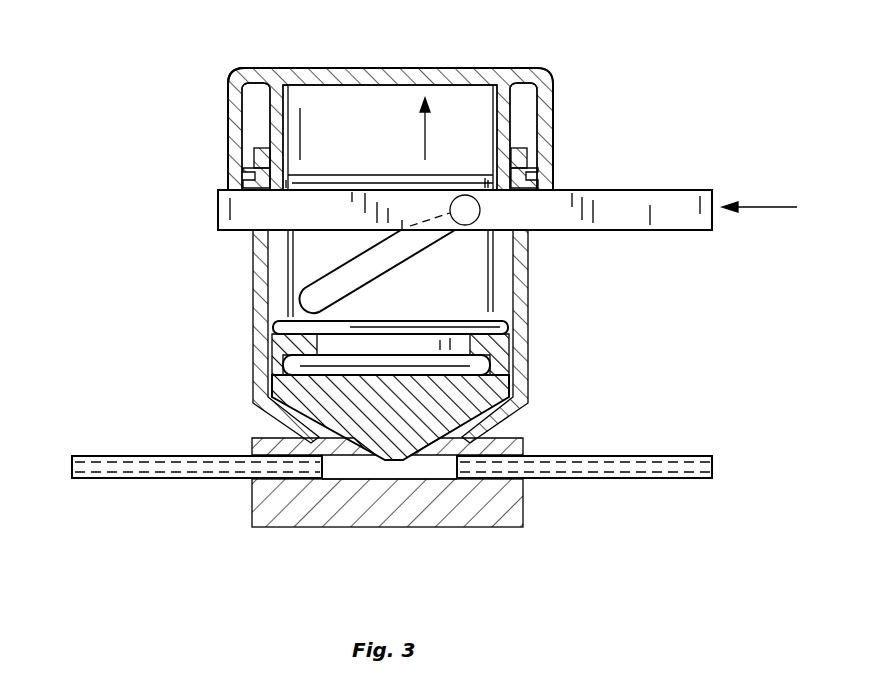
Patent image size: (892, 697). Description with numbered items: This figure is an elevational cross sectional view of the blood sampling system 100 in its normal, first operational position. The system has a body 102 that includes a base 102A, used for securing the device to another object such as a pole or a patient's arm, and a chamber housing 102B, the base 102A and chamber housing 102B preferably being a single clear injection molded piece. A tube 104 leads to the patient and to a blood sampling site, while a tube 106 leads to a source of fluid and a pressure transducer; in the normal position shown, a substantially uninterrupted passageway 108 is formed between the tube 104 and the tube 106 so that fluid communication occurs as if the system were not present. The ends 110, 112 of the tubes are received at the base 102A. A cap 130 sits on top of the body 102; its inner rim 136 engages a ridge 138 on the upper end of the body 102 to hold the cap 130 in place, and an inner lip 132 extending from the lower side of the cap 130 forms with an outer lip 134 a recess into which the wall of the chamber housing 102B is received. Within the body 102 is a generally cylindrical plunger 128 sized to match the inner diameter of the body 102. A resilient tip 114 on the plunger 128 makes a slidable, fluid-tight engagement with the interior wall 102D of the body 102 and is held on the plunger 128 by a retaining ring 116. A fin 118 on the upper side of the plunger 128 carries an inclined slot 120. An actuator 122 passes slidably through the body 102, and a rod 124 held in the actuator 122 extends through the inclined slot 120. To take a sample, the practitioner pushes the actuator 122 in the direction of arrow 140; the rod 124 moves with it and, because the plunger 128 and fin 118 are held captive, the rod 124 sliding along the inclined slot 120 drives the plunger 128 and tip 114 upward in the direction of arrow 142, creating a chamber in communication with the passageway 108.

The blood sampling system 100 is at (680, 74).
The body 102 is at (423, 415).
The base 102A is at (527, 505).
The chamber housing 102B is at (522, 295).
The interior wall 102D is at (257, 258).
The tube 104 is at (150, 482).
The tube 106 is at (660, 482).
The passageway 108 is at (415, 472).
The first sheet end 110 is at (183, 458).
The second sheet end 112 is at (595, 456).
The tip 114 is at (512, 400).
The retaining ring 116 is at (492, 350).
The fin 118 is at (462, 262).
The inclined slot 120 is at (368, 282).
The actuator 122 is at (668, 203).
The rod 124 is at (478, 203).
The plunger 128 is at (270, 322).
The cap 130 is at (470, 68).
The inner lip 132 is at (292, 128).
The outer lip 134 is at (228, 120).
The inner rim 136 is at (243, 180).
The ridge 138 is at (247, 166).
The arrow 140 is at (762, 208).
The arrow 142 is at (425, 136).